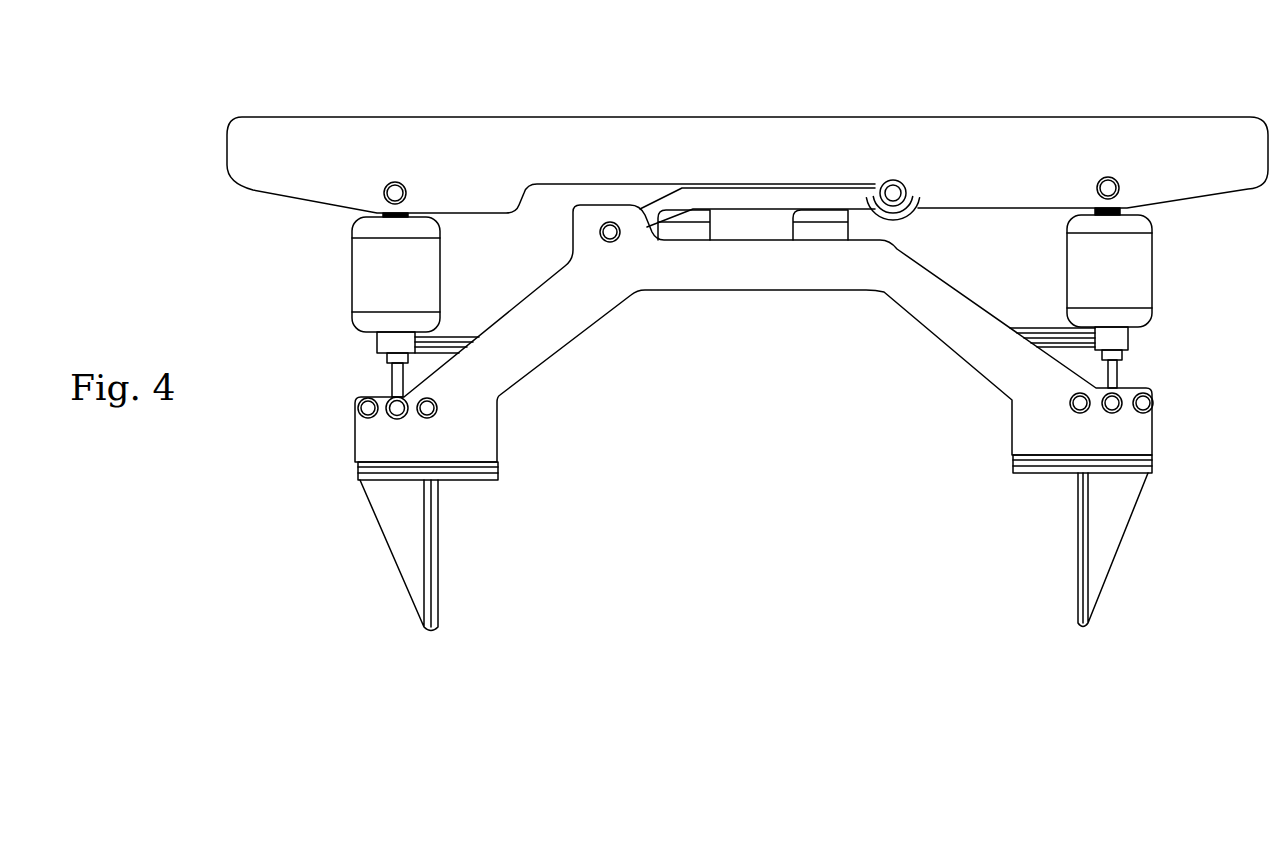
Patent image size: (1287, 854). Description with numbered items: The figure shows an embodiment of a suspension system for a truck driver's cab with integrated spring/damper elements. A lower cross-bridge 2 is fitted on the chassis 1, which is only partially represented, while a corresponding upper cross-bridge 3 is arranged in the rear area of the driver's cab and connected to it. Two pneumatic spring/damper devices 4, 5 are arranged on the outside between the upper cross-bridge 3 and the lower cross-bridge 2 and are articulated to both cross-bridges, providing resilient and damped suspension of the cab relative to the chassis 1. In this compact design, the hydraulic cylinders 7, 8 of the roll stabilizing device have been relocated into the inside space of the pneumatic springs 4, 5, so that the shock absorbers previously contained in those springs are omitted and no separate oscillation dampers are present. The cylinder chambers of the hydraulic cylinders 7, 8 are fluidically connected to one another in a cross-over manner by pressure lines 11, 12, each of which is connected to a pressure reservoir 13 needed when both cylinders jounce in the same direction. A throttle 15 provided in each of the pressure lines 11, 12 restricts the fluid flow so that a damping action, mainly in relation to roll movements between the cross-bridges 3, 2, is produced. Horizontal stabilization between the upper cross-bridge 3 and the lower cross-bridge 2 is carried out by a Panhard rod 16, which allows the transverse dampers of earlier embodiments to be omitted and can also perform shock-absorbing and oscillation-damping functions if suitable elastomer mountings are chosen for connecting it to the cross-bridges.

The chassis 1 is at (403, 528).
The lower cross-bridge 2 is at (808, 267).
The upper cross-bridge 3 is at (332, 138).
The pneumatic spring/damper device 4 is at (395, 282).
The pneumatic spring/damper device 5 is at (1108, 275).
The hydraulic cylinder 7 is at (395, 342).
The hydraulic cylinder 8 is at (1112, 337).
The pressure line 11 is at (447, 338).
The pressure line 12 is at (1055, 332).
The pressure reservoir 13 is at (683, 223).
The throttle 15 is at (397, 378).
The Panhard rod 16 is at (655, 208).